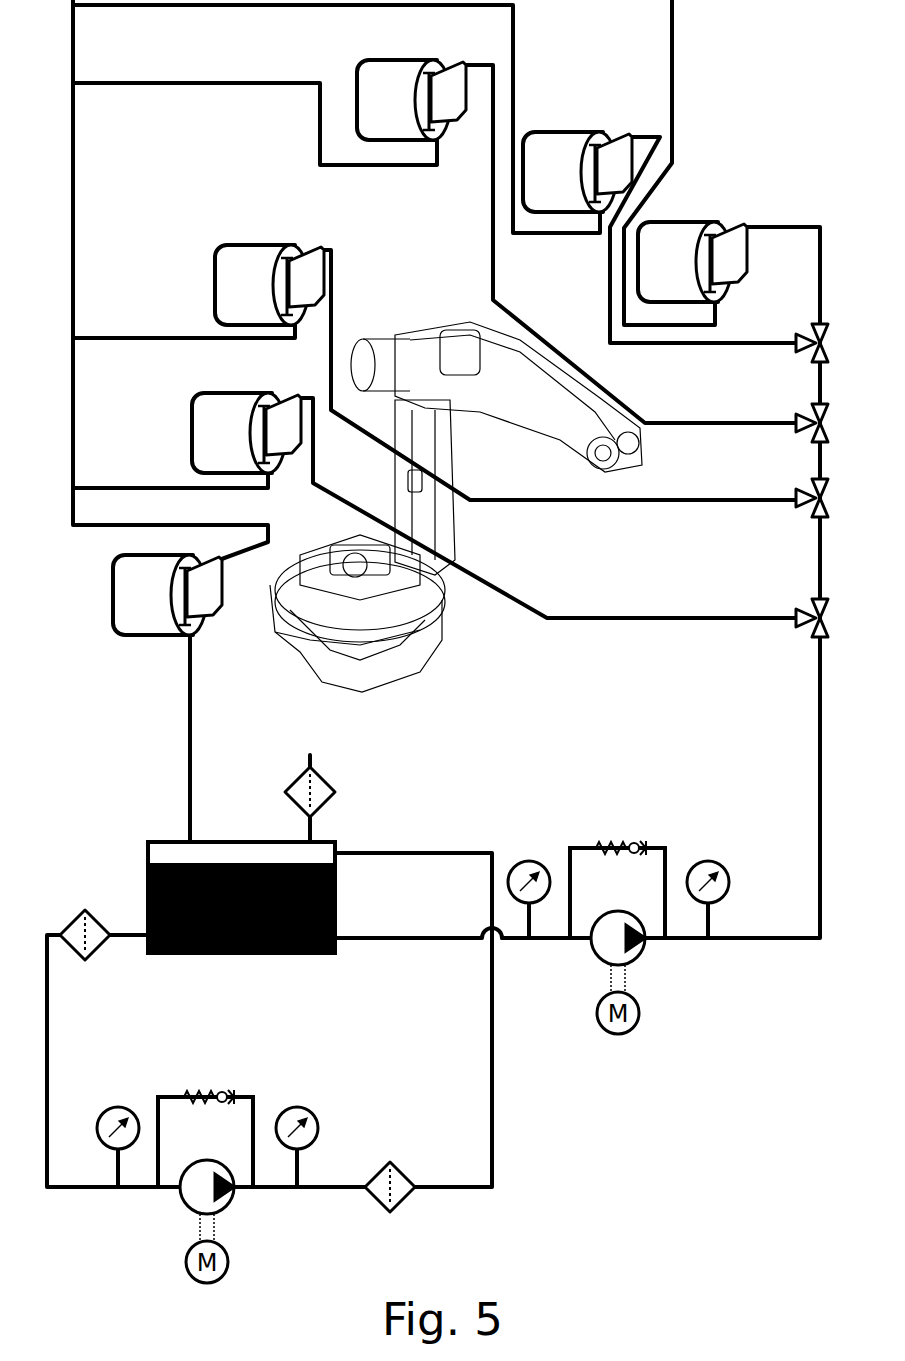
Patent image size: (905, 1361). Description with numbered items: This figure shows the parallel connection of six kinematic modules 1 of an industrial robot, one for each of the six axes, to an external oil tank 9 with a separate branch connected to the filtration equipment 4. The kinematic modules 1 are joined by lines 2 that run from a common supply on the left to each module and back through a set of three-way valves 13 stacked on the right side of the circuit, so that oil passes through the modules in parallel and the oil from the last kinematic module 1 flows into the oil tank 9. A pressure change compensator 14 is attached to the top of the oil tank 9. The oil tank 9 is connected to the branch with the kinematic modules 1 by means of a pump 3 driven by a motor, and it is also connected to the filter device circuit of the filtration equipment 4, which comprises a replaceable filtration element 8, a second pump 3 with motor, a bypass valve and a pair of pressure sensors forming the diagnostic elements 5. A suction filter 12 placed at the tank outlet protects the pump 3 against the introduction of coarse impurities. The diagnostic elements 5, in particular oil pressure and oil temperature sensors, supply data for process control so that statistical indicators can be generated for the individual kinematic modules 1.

The kinematic module 1 is at (410, 332).
The line 2 is at (320, 122).
The pump 3 is at (222, 1208).
The filtration equipment 4 is at (386, 1205).
The diagnostic element 5 is at (122, 1108).
The filtration element 8 is at (398, 1178).
The oil tank 9 is at (240, 952).
The suction filter 12 is at (90, 910).
The three-way valve 13 is at (808, 348).
The compensator 14 is at (337, 792).